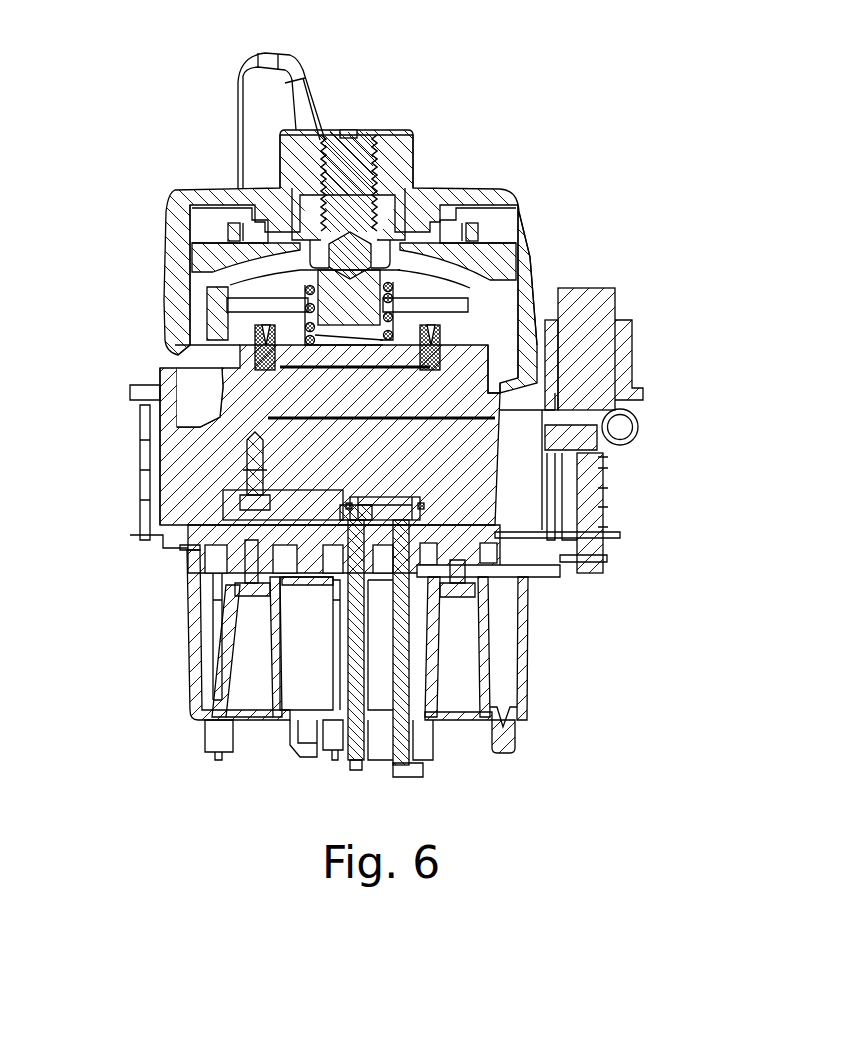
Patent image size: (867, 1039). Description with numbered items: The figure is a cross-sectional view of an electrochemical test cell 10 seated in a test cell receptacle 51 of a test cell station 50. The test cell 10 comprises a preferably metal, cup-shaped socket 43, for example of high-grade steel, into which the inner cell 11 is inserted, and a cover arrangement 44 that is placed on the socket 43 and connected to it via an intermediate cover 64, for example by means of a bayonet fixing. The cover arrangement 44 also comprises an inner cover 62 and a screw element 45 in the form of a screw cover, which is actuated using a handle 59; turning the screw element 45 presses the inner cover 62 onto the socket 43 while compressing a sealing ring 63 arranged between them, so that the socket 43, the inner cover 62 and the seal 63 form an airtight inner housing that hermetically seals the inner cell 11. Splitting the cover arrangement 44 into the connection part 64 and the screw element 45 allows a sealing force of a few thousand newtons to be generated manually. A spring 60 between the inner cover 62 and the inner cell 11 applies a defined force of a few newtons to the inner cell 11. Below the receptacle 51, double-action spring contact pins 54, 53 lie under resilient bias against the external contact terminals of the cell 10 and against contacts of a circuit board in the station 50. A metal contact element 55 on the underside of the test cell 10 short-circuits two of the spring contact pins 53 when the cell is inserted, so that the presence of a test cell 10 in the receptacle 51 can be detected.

The electrochemical test cell 10 is at (542, 222).
The inner cell 11 is at (442, 397).
The socket 43 is at (363, 453).
The cover arrangement 44 is at (500, 178).
The screw element 45 is at (440, 187).
The test cell station 50 is at (556, 659).
The test cell receptacle 51 is at (150, 463).
The double-action spring contact pin 53 is at (355, 680).
The double-action spring contact pin 54 is at (218, 760).
The metal contact element 55 is at (392, 500).
The handle 59 is at (318, 78).
The spring 60 is at (455, 300).
The inner cover 62 is at (255, 293).
The sealing ring 63 is at (215, 337).
The intermediate cover 64 is at (190, 238).